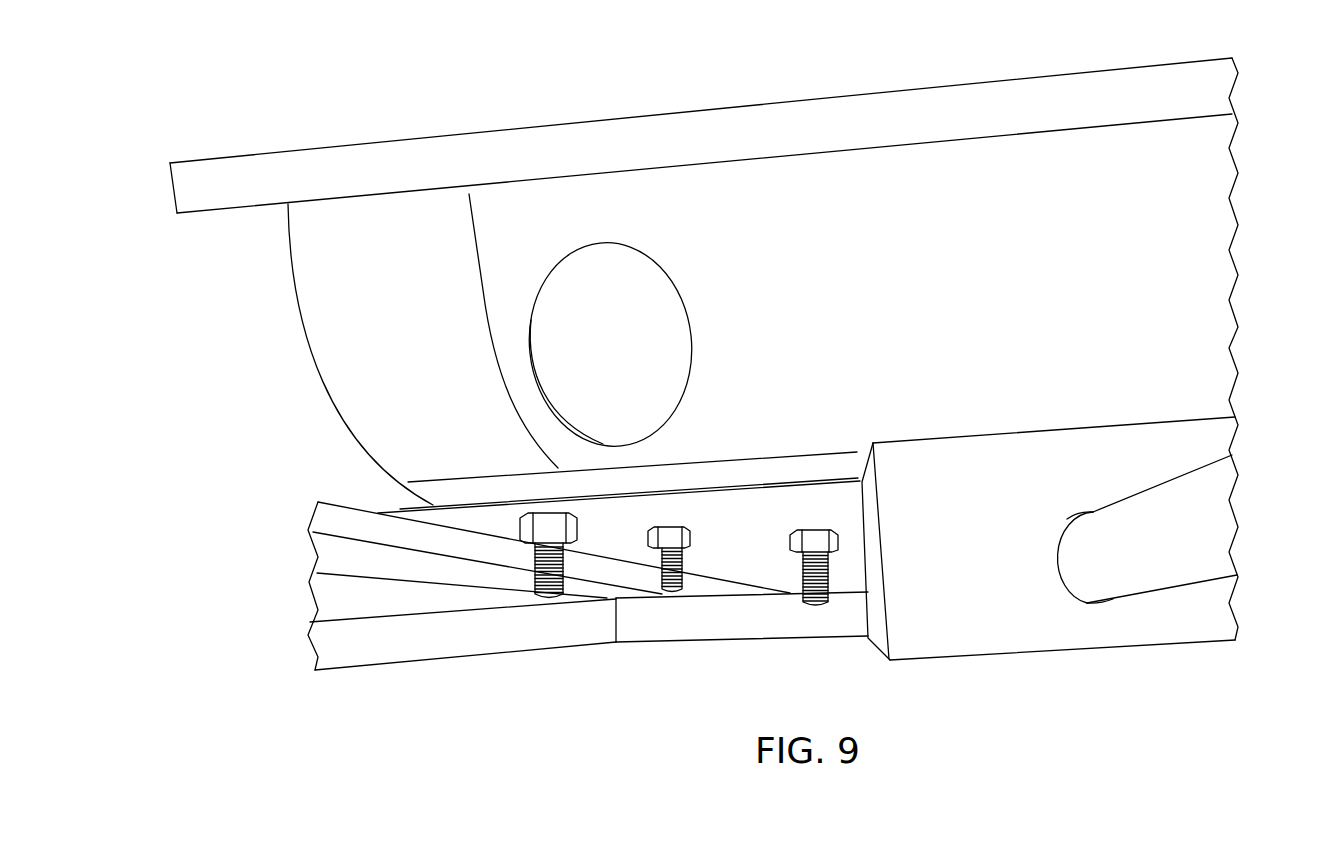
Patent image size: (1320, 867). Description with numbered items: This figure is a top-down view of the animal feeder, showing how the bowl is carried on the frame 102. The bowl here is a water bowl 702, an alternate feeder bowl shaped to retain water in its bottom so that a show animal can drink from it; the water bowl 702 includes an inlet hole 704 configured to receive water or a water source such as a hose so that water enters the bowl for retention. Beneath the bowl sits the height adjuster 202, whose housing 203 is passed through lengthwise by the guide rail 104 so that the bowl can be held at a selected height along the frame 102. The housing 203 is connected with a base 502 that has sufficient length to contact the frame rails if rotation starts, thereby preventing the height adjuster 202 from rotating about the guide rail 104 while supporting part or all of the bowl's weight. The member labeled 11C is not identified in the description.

The frame rail 11C is at (849, 173).
The water bowl 702 is at (744, 182).
The inlet hole 704 is at (690, 322).
The base 502 is at (742, 488).
The frame 102 is at (314, 577).
The housing 203 is at (1107, 642).
The height adjuster 202 is at (1193, 632).
The guide rail 104 is at (1227, 475).